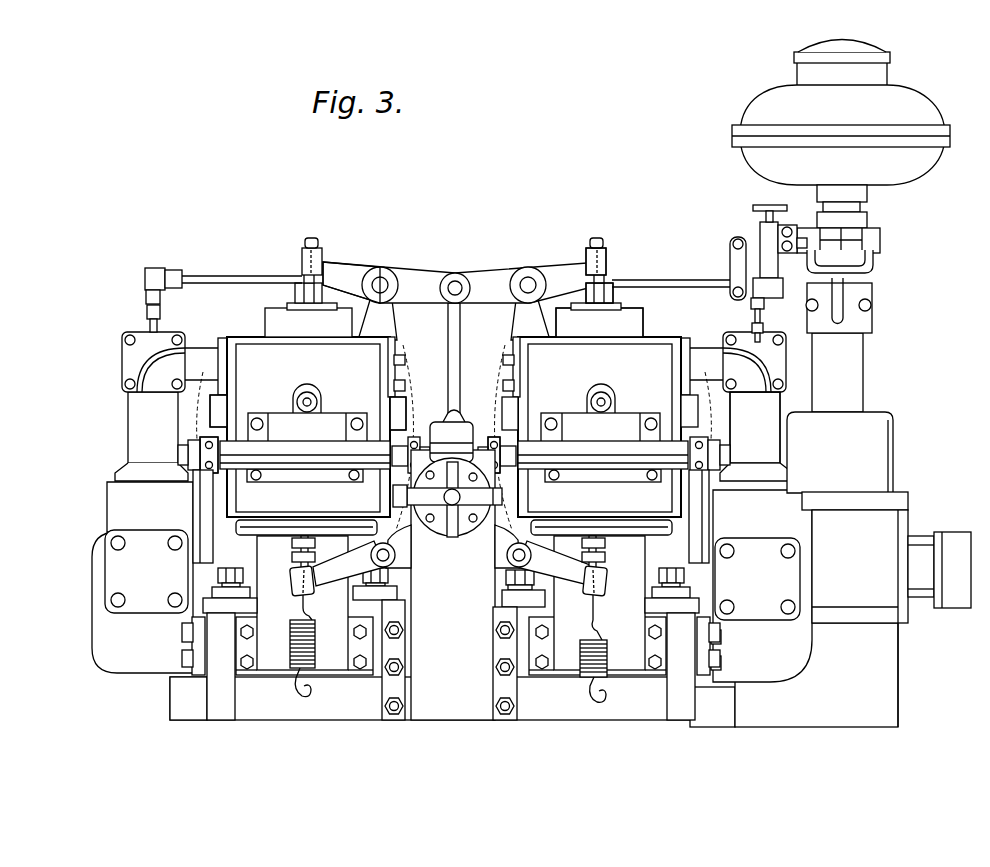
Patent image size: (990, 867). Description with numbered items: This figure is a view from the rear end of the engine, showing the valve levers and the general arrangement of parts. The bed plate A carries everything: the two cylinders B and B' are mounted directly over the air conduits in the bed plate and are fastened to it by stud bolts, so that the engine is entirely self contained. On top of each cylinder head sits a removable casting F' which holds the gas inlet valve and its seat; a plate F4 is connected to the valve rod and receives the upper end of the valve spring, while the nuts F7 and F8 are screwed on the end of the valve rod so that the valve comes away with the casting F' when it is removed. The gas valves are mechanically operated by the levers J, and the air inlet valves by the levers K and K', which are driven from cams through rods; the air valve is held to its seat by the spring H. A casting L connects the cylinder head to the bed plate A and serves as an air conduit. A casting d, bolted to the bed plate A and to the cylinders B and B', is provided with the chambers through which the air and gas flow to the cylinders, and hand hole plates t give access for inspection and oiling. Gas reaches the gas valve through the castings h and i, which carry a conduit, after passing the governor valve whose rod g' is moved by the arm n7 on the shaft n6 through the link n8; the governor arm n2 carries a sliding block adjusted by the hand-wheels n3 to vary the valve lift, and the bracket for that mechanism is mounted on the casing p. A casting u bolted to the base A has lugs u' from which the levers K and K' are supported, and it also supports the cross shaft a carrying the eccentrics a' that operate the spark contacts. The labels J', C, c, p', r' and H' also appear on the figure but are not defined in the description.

The bed plate A is at (555, 721).
The cylinder B' is at (304, 417).
The cylinder B is at (604, 417).
The removable casting F' is at (624, 337).
The plate F4 is at (284, 306).
The nut F7 is at (613, 295).
The nut F8 is at (608, 281).
The shaft a is at (191, 411).
The eccentrics a' is at (347, 433).
The lever J is at (461, 276).
The rocker arm J' is at (373, 276).
The shaft n6 is at (456, 272).
The arm n7 is at (146, 279).
The arm n2 is at (760, 231).
The hand-wheels n3 is at (762, 206).
The link n8 is at (766, 304).
The valve rod g' is at (745, 325).
The pipe c is at (846, 345).
The air chamber C is at (841, 113).
The casing p is at (840, 452).
The pump body p' is at (816, 639).
The casting d is at (452, 582).
The hand hole plates t is at (452, 575).
The casting i is at (737, 406).
The casting h is at (755, 427).
The casting u is at (453, 585).
The lugs u' is at (451, 546).
The disc r' is at (447, 510).
The lever K' is at (349, 563).
The lever K is at (555, 563).
The casting L is at (601, 572).
The spring H' is at (313, 646).
The spring H is at (603, 648).